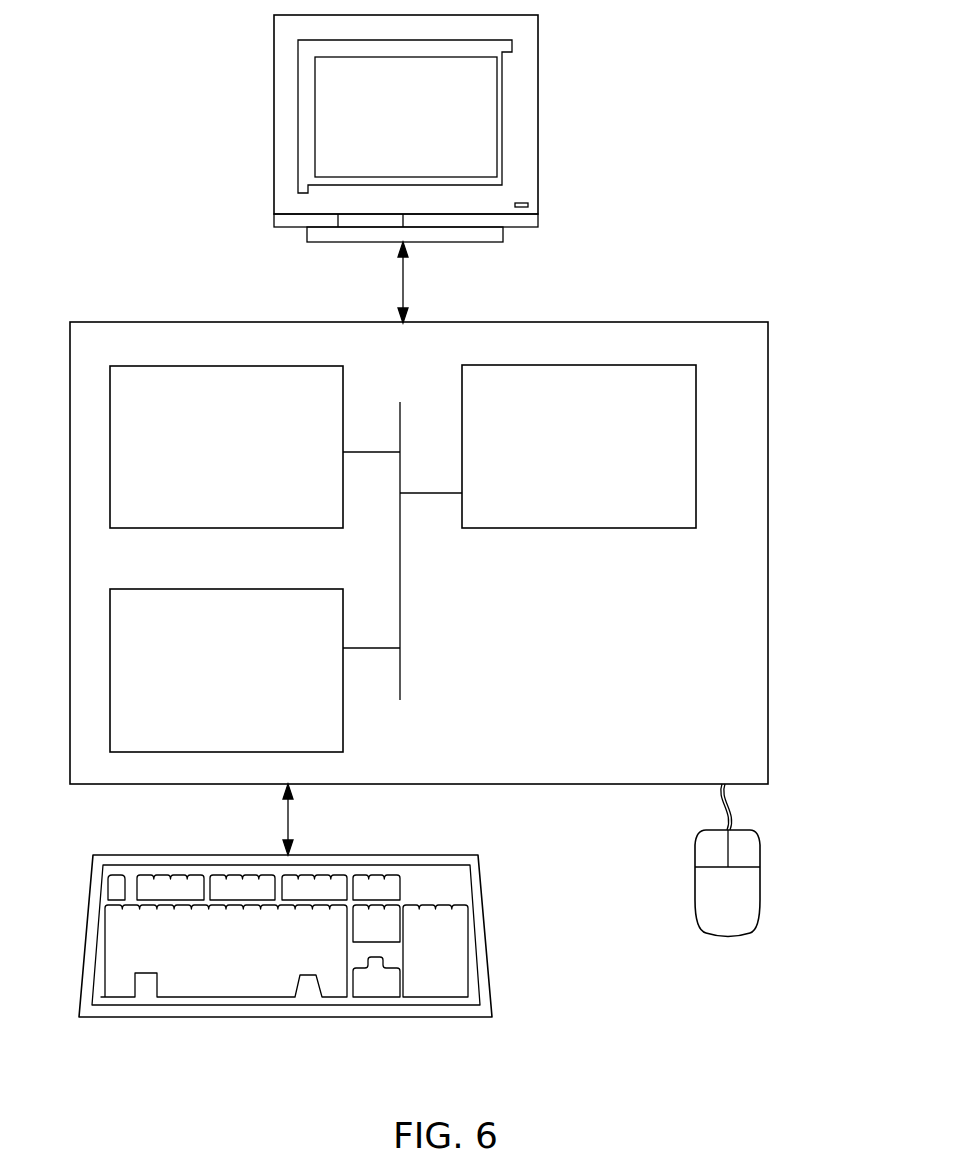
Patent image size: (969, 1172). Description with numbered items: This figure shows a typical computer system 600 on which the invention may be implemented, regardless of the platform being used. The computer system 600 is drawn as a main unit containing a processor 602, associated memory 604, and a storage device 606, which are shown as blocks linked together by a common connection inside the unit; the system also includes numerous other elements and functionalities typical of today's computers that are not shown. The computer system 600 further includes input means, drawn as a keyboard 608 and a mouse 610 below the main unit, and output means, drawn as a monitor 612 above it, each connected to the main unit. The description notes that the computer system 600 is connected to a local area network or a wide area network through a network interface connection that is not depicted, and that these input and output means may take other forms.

The computer system 600 is at (790, 174).
The processor 602 is at (207, 458).
The memory 604 is at (203, 682).
The storage device 606 is at (554, 459).
The keyboard 608 is at (222, 962).
The mouse 610 is at (707, 907).
The monitor 612 is at (383, 133).